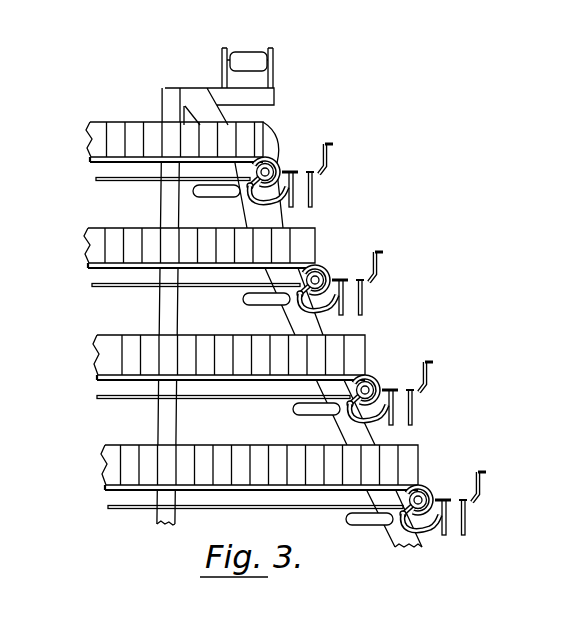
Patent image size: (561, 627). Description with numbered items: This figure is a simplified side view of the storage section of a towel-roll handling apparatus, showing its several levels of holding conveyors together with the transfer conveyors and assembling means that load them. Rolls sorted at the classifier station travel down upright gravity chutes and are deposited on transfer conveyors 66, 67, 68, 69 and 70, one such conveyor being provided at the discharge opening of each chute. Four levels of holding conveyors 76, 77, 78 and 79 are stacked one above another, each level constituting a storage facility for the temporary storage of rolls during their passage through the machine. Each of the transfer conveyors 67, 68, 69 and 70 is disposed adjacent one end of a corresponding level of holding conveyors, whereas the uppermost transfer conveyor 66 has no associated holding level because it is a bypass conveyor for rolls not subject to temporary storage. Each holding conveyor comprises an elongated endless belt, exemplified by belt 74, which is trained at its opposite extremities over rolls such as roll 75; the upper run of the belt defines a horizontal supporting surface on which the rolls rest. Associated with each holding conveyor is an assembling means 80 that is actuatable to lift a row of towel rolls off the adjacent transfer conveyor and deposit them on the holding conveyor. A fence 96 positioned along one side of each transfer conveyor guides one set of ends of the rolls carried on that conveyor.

The transfer conveyor 66 is at (258, 40).
The transfer conveyor 67 is at (306, 156).
The transfer conveyor 68 is at (360, 251).
The transfer conveyor 69 is at (409, 358).
The transfer conveyor 70 is at (461, 462).
The conveyor belt 74 is at (123, 183).
The roll 75 is at (268, 138).
The level of holding conveyors 76 is at (82, 171).
The level of holding conveyors 77 is at (86, 281).
The level of holding conveyors 78 is at (79, 394).
The level of holding conveyors 79 is at (86, 497).
The assembling means 80 is at (244, 207).
The fence 96 is at (330, 152).